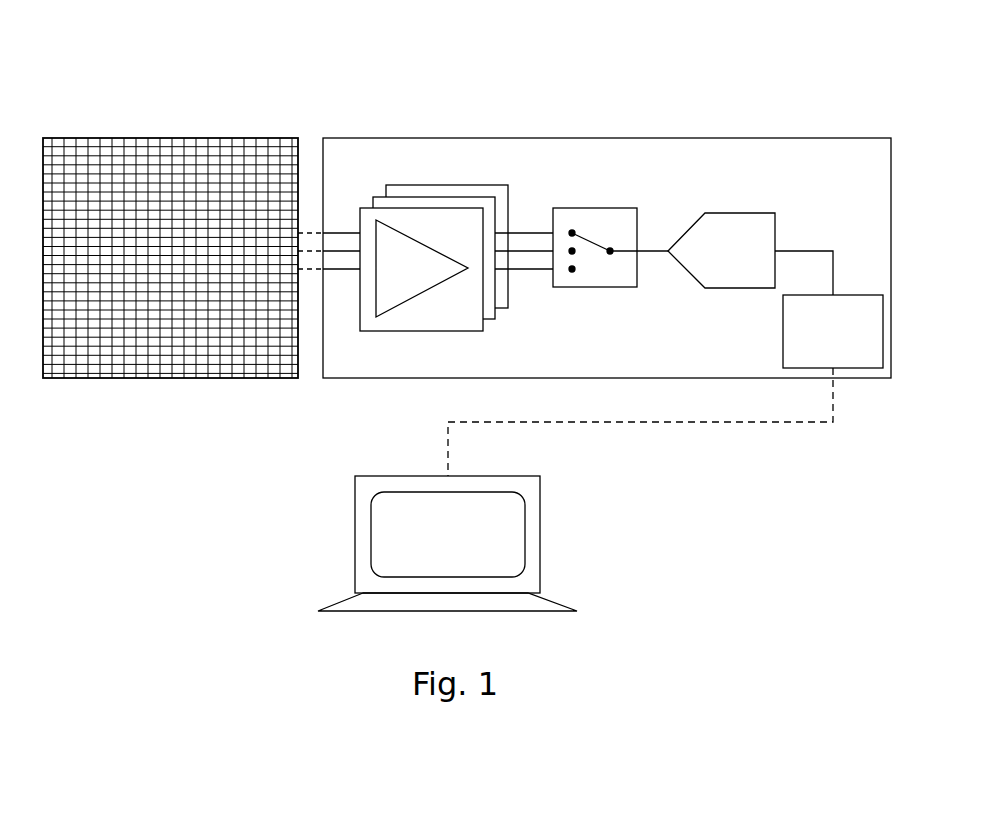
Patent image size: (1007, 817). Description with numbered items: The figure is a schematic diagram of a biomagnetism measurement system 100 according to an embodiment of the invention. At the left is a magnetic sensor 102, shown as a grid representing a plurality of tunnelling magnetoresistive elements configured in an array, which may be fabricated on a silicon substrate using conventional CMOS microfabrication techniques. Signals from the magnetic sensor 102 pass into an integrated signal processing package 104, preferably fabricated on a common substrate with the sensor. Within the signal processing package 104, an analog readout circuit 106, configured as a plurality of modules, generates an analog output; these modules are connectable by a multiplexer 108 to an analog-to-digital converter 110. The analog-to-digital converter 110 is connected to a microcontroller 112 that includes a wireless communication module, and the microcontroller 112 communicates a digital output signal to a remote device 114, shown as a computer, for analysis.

The biomagnetism measurement system 100 is at (166, 600).
The magnetic sensor 102 is at (169, 138).
The integrated signal processing package 104 is at (722, 138).
The analog readout circuit 106 is at (455, 185).
The multiplexer 108 is at (595, 207).
The analog-to-digital converter 110 is at (756, 214).
The microcontroller 112 is at (883, 332).
The remote device 114 is at (540, 533).